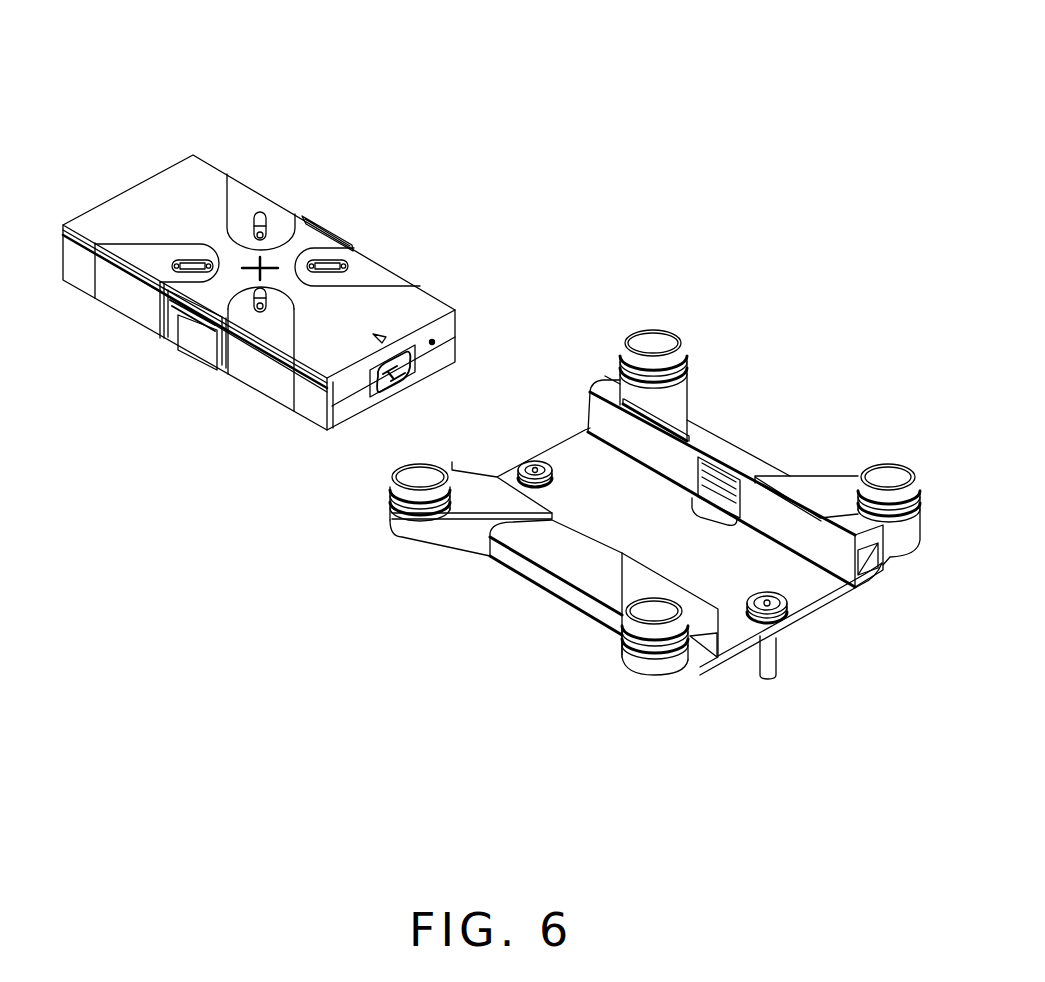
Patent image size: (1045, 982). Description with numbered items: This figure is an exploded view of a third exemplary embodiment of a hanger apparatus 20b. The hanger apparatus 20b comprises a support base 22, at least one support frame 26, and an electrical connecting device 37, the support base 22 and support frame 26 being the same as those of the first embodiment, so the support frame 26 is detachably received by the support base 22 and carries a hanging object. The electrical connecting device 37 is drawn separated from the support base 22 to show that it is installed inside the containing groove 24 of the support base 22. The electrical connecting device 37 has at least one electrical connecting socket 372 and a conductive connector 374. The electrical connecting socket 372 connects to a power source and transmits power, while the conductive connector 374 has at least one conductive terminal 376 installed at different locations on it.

The hanger apparatus 20b is at (575, 72).
The electrical connecting device 37 is at (154, 169).
The electrical connecting socket 372 is at (402, 375).
The conductive connector 374 is at (248, 197).
The conductive terminal 376 is at (312, 264).
The support base 22 is at (788, 636).
The containing groove 24 is at (810, 588).
The support frame 26 is at (814, 467).